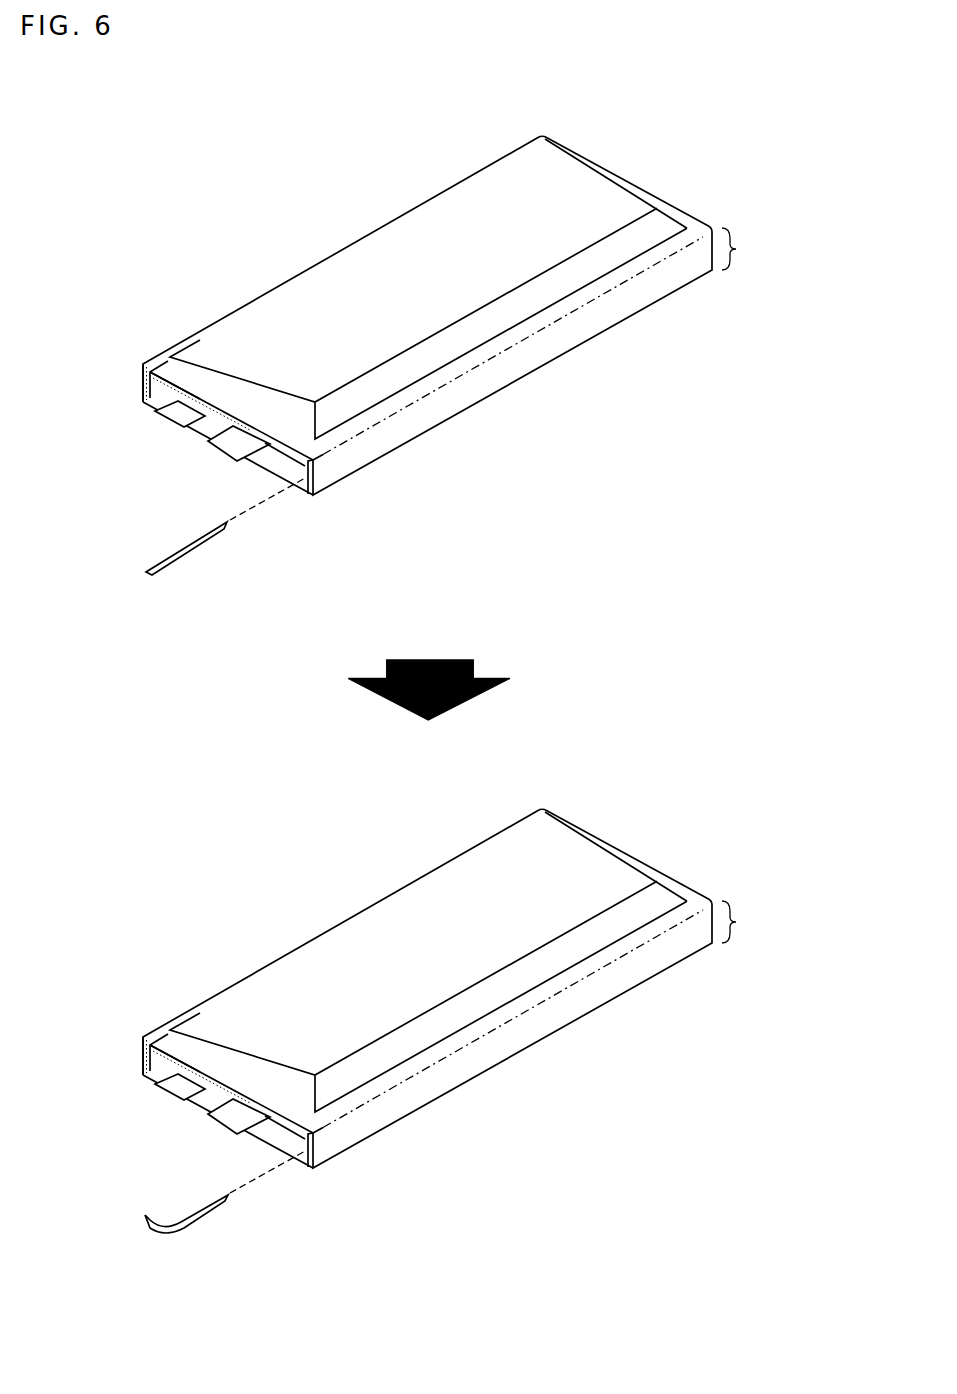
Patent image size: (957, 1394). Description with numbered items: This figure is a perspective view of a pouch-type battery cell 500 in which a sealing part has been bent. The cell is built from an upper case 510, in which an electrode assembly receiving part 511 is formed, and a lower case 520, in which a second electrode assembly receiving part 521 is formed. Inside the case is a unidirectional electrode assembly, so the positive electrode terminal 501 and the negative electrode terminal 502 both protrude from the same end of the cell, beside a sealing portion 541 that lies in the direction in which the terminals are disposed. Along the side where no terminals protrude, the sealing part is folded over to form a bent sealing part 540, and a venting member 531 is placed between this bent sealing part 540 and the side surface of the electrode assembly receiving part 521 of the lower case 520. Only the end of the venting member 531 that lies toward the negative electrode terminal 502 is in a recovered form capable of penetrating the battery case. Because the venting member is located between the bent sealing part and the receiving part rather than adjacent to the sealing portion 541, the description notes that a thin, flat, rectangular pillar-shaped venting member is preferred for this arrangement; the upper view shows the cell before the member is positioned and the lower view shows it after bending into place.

The pouch-type battery cell 500 is at (177, 114).
The upper case 510 is at (575, 330).
The electrode assembly receiving part 511 is at (327, 290).
The lower case 520 is at (140, 393).
The electrode assembly receiving part 521 is at (277, 450).
The venting member 531 is at (177, 546).
The bent sealing part 540 is at (761, 585).
The sealing portion 541 is at (172, 355).
The positive electrode terminal 501 is at (183, 415).
The negative electrode terminal 502 is at (217, 455).